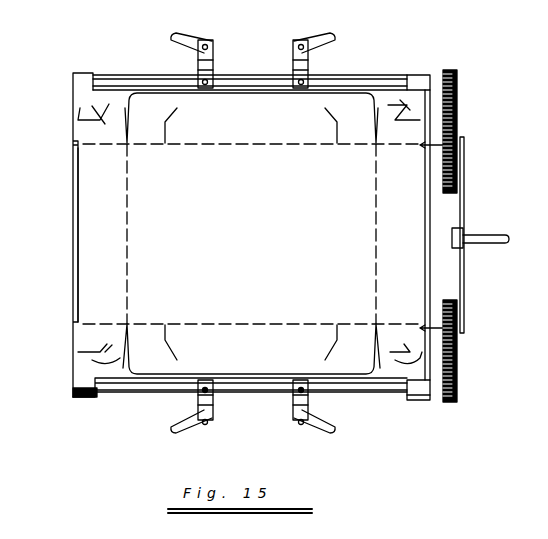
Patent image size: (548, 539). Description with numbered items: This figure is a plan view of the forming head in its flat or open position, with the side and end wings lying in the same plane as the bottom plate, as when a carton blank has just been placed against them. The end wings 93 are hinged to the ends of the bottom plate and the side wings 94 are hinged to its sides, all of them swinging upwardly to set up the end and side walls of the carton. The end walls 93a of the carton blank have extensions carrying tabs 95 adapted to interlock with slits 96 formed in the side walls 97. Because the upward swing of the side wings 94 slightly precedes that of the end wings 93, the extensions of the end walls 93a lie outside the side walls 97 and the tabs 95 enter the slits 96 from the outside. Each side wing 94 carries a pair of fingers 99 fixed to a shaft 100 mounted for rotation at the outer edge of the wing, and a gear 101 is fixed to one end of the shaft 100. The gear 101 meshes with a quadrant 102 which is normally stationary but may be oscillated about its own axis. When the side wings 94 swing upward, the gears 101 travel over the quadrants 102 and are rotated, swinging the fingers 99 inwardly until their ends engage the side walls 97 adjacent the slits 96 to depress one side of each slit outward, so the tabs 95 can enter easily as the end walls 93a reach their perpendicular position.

The end wings 93 is at (73, 283).
The end walls 93a is at (100, 223).
The side wings 94 is at (418, 87).
The tabs 95 is at (103, 109).
The slits 96 is at (177, 121).
The side walls 97 is at (262, 123).
The fingers 99 is at (178, 35).
The shaft 100 is at (262, 390).
The gear 101 is at (457, 398).
The quadrants 102 is at (457, 350).